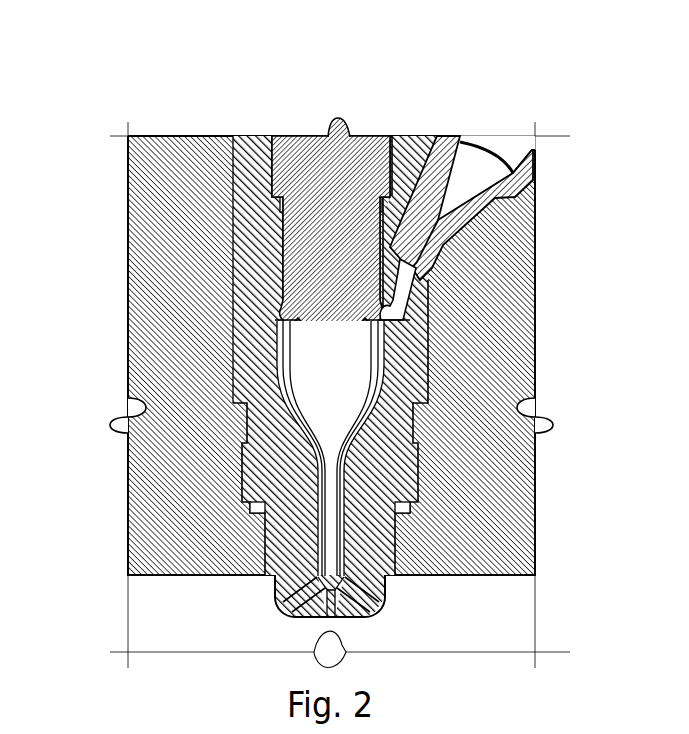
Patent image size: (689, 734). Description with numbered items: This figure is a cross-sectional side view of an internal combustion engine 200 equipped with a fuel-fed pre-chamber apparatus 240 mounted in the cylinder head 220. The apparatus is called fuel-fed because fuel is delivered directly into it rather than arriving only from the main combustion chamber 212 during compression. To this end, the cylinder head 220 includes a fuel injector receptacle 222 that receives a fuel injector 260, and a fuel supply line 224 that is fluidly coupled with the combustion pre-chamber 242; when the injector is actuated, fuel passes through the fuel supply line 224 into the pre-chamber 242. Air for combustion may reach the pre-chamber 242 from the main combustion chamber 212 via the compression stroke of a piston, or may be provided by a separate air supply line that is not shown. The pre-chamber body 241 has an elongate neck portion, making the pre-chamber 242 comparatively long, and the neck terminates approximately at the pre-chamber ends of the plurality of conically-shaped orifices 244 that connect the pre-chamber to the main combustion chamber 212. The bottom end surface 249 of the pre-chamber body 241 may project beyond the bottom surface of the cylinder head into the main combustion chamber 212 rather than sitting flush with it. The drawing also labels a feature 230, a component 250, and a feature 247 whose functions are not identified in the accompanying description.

The internal combustion engine 200 is at (516, 82).
The cylinder head 220 is at (510, 487).
The nozzle 230 is at (245, 138).
The pre-chamber apparatus 240 is at (264, 124).
The pre-chamber body 241 is at (417, 137).
The insert 250 is at (358, 137).
The fuel injector 260 is at (453, 137).
The fuel injector receptacle 222 is at (472, 221).
The fuel supply line 224 is at (402, 297).
The combustion pre-chamber 242 is at (330, 410).
The nozzle channel 247 is at (310, 492).
The orifices 244 is at (288, 604).
The bottom end surface 249 is at (350, 618).
The main combustion chamber 212 is at (389, 641).